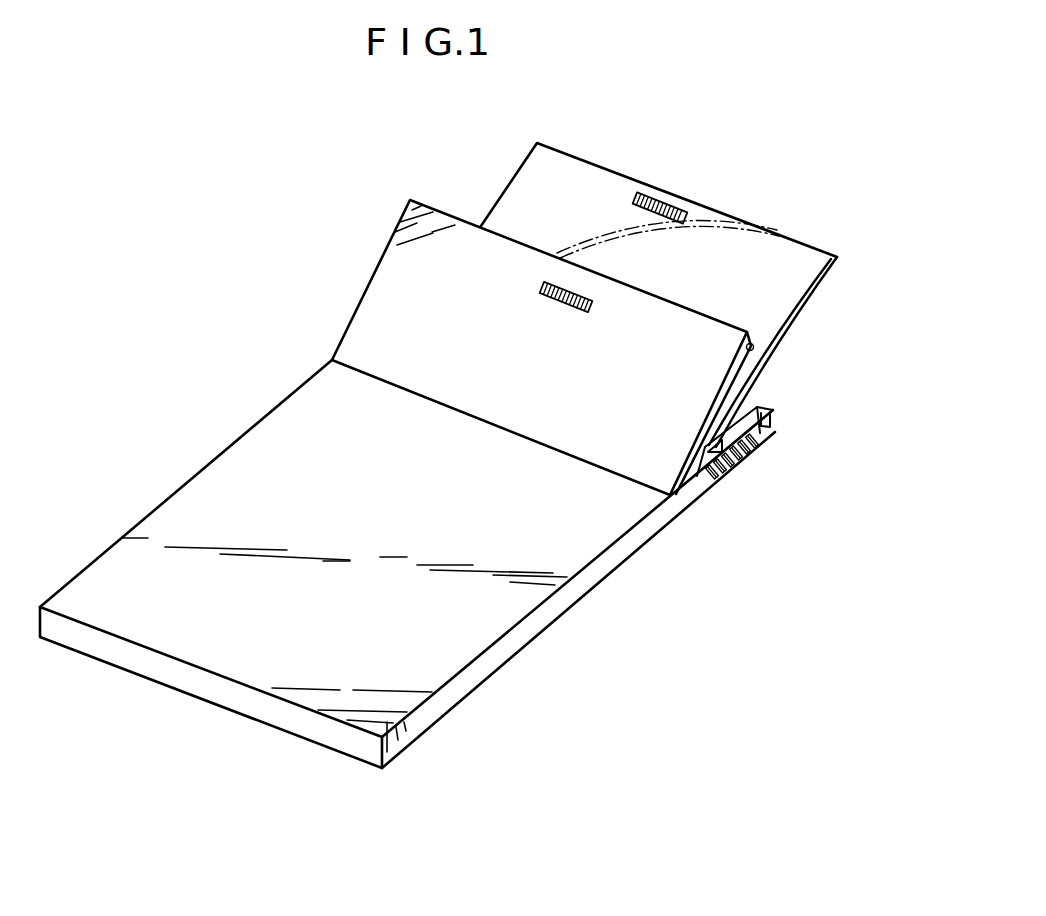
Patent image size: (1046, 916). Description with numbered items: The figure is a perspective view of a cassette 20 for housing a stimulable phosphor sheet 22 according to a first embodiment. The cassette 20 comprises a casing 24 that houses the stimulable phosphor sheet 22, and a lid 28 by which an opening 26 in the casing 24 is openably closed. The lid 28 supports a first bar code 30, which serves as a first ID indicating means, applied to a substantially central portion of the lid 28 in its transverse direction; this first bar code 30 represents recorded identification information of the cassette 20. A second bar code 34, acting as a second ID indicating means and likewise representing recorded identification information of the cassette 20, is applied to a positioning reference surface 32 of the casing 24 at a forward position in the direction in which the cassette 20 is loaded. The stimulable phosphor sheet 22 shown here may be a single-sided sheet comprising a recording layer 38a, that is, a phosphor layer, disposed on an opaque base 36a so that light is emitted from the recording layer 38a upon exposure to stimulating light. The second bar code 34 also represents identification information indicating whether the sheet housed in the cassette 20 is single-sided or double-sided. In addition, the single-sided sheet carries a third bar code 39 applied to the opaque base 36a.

The cassette 20 is at (487, 440).
The stimulable phosphor sheet 22 is at (679, 185).
The casing 24 is at (426, 564).
The opening 26 is at (821, 352).
The lid 28 is at (534, 322).
The first bar code 30 is at (550, 283).
The positioning reference surface 32 is at (645, 535).
The second bar code 34 is at (752, 457).
The opaque base 36a is at (778, 242).
The recording layer 38a is at (807, 305).
The third bar code 39 is at (645, 197).